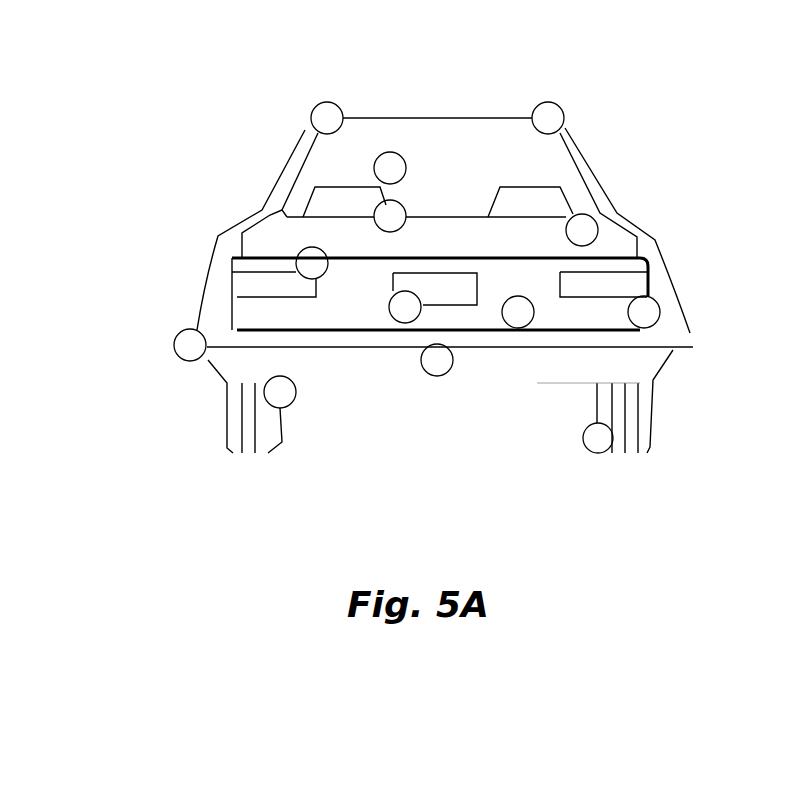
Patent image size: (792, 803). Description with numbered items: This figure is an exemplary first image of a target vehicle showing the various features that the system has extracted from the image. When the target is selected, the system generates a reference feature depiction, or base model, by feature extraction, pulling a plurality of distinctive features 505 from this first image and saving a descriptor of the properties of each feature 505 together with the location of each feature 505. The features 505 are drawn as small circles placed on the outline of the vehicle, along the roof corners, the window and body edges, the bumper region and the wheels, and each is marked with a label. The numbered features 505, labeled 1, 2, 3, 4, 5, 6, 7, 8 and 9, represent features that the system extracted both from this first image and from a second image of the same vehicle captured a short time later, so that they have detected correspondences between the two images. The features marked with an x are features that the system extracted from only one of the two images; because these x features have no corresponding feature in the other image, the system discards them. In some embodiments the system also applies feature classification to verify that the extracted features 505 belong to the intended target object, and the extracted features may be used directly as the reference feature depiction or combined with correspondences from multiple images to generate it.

The distinctive features 505 is at (390, 152).
The indicator position 1 is at (327, 118).
The indicator position 2 is at (548, 118).
The indicator position 3 is at (390, 216).
The indicator position 4 is at (312, 263).
The indicator position 5 is at (405, 307).
The indicator position 6 is at (644, 312).
The indicator position 7 is at (190, 345).
The indicator position 8 is at (280, 392).
The indicator position 9 is at (598, 438).